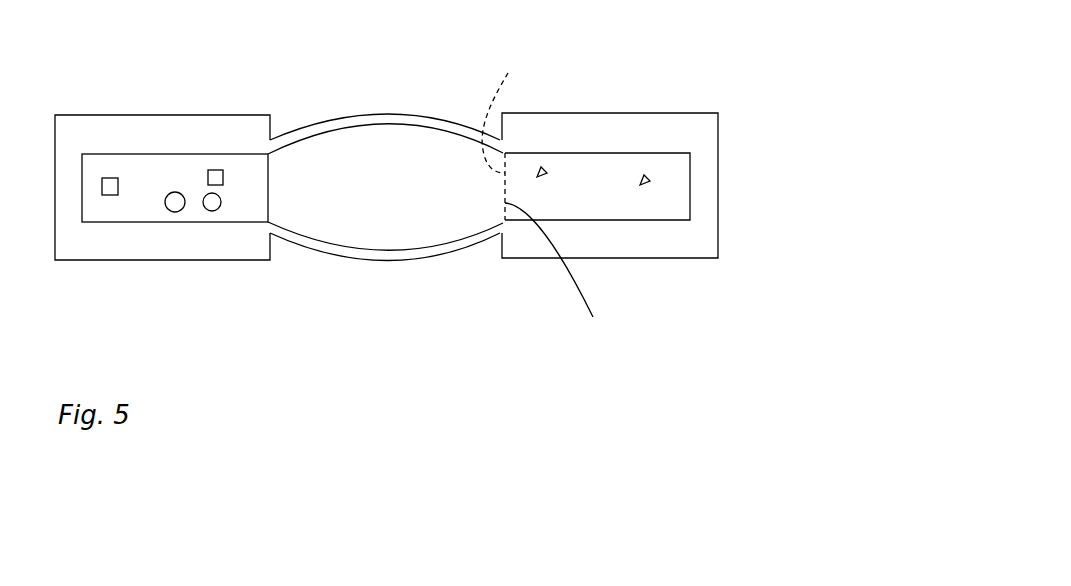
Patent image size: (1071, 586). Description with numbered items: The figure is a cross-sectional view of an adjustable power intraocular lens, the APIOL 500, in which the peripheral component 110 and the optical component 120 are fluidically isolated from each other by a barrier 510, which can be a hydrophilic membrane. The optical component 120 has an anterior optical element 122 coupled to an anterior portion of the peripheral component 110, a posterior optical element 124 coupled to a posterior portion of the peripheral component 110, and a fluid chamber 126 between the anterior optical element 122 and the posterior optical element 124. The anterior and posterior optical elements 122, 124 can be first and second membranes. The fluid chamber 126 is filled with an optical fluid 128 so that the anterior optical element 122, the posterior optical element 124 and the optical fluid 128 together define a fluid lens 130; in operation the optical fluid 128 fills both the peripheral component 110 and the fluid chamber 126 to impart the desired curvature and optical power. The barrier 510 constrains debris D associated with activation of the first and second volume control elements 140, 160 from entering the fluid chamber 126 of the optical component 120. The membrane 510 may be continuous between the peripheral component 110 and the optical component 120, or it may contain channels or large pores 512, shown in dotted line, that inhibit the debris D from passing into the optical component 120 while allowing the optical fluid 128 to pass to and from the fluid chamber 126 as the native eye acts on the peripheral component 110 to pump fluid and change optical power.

The APIOL 500 is at (748, 137).
The peripheral component 110 is at (650, 112).
The optical component 120 is at (300, 105).
The anterior optical element 122 is at (436, 118).
The posterior optical element 124 is at (335, 258).
The fluid chamber 126 is at (400, 203).
The optical fluid 128 is at (313, 213).
The fluid lens 130 is at (375, 278).
The first volume control element 140 is at (210, 212).
The second volume control element 160 is at (215, 170).
The barrier 510 is at (268, 188).
The pores 512 is at (622, 195).
The debris D is at (537, 177).